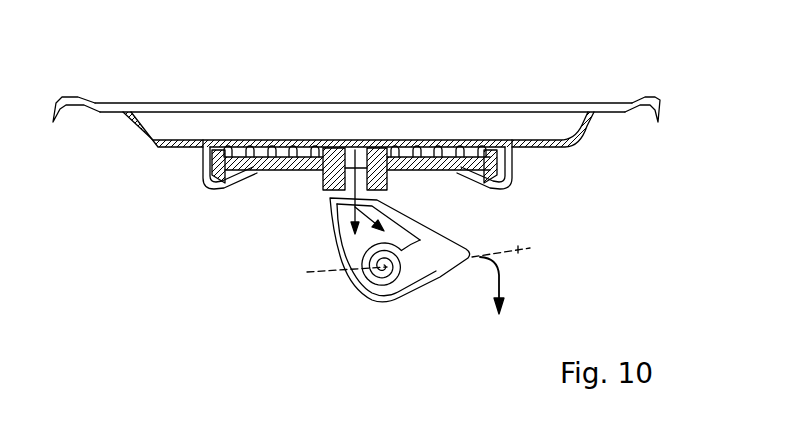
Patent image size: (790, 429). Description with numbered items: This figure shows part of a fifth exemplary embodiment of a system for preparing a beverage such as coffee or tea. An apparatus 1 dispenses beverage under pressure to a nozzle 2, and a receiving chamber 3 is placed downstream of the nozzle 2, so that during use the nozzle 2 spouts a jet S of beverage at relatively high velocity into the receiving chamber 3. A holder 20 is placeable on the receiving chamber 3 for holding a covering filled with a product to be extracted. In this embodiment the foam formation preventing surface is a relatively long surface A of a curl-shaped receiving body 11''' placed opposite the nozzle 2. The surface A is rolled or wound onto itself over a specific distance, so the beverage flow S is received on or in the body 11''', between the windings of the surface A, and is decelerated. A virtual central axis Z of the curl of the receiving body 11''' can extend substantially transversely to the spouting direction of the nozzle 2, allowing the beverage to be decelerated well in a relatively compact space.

The apparatus 1 is at (296, 84).
The nozzle 2 is at (358, 166).
The receiving chamber 3 is at (315, 236).
The holder 20 is at (572, 133).
The curl-shaped receiving body 11''' is at (346, 288).
The foam formation preventing surface A is at (353, 255).
The jet of beverage S is at (328, 195).
The virtual central axis Z is at (501, 266).